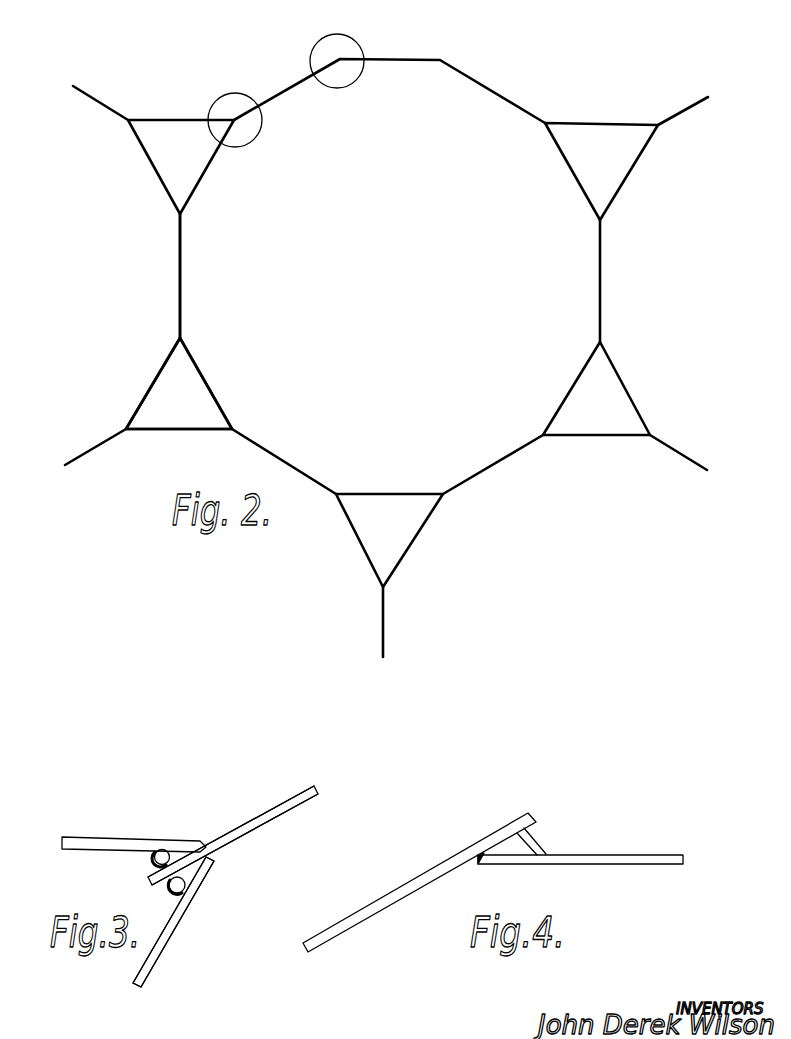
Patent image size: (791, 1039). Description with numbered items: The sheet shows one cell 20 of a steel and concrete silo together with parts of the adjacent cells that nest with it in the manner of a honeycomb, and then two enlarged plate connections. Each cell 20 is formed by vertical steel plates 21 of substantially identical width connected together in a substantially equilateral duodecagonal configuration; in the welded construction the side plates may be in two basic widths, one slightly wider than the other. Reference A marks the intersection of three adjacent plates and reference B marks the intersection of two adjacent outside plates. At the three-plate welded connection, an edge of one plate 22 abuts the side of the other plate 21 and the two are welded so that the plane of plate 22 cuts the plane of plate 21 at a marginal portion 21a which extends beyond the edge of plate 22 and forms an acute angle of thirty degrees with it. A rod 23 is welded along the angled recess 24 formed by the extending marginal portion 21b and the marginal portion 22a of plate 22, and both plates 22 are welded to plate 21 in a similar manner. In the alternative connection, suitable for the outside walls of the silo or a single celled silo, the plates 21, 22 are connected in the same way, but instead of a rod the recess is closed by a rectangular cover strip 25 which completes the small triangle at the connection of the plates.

In FIG. 2, the cell 20 is at (387, 228).
In FIG. 2, the vertical steel plate 21 is at (179, 263).
In FIG. 3, the vertical steel plate 21 is at (304, 791).
In FIG. 4, the vertical steel plate 21 is at (407, 886).
In FIG. 3, the marginal portion 21a is at (262, 825).
In FIG. 3, the extending marginal portion 21b is at (181, 840).
In FIG. 2, the plate 22 is at (153, 400).
In FIG. 3, the plate 22 is at (121, 838).
In FIG. 4, the plate 22 is at (628, 866).
In FIG. 3, the marginal portion 22a is at (174, 940).
In FIG. 3, the rod 23 is at (170, 888).
In FIG. 3, the angled recess 24 is at (188, 876).
In FIG. 4, the rectangular cover strip 25 is at (533, 824).
In FIG. 2, the intersection of three adjacent plates A is at (229, 94).
In FIG. 2, the intersection of two adjacent outside plates B is at (313, 53).